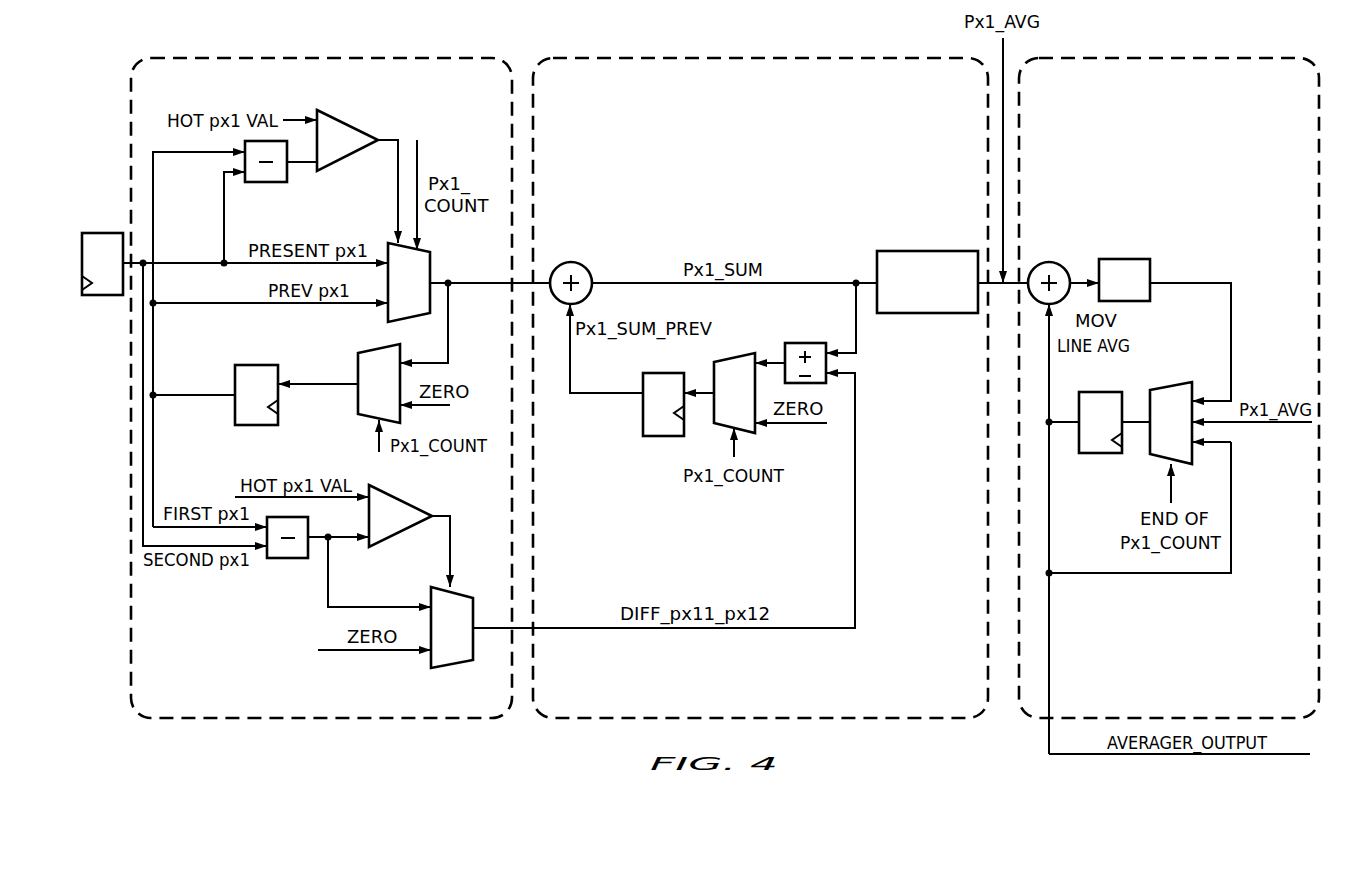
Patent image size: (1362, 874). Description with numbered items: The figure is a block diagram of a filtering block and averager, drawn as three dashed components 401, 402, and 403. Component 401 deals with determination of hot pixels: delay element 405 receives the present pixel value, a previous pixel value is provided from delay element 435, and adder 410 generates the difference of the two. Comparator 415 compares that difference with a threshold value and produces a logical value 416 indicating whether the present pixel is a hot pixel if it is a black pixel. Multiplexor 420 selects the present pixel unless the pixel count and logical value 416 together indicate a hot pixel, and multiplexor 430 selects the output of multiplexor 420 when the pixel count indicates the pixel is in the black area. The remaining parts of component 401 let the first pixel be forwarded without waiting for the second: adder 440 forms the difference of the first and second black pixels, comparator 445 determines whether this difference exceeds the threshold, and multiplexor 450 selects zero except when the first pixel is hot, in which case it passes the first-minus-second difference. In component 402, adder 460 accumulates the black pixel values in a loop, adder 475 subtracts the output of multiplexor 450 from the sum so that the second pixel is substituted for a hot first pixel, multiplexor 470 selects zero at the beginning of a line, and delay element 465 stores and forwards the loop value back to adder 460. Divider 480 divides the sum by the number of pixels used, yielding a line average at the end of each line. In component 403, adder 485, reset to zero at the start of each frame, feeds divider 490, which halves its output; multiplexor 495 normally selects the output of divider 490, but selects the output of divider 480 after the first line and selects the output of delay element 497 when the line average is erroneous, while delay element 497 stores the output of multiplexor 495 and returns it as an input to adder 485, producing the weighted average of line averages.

The component 401 is at (268, 58).
The component 402 is at (733, 58).
The component 403 is at (1210, 58).
The delay element 405 is at (102, 233).
The adder 410 is at (289, 182).
The comparator 415 is at (330, 122).
The logical value 416 is at (386, 140).
The multiplexor 420 is at (430, 272).
The multiplexor 430 is at (358, 366).
The delay element 435 is at (256, 365).
The adder 440 is at (286, 558).
The comparator 445 is at (402, 536).
The multiplexor 450 is at (455, 667).
The adder 460 is at (571, 262).
The delay element 465 is at (658, 436).
The multiplexor 470 is at (735, 357).
The adder 475 is at (814, 343).
The divider 480 is at (932, 251).
The adder 485 is at (1049, 262).
The divider 490 is at (1124, 259).
The multiplexor 495 is at (1171, 386).
The delay element 497 is at (1100, 453).